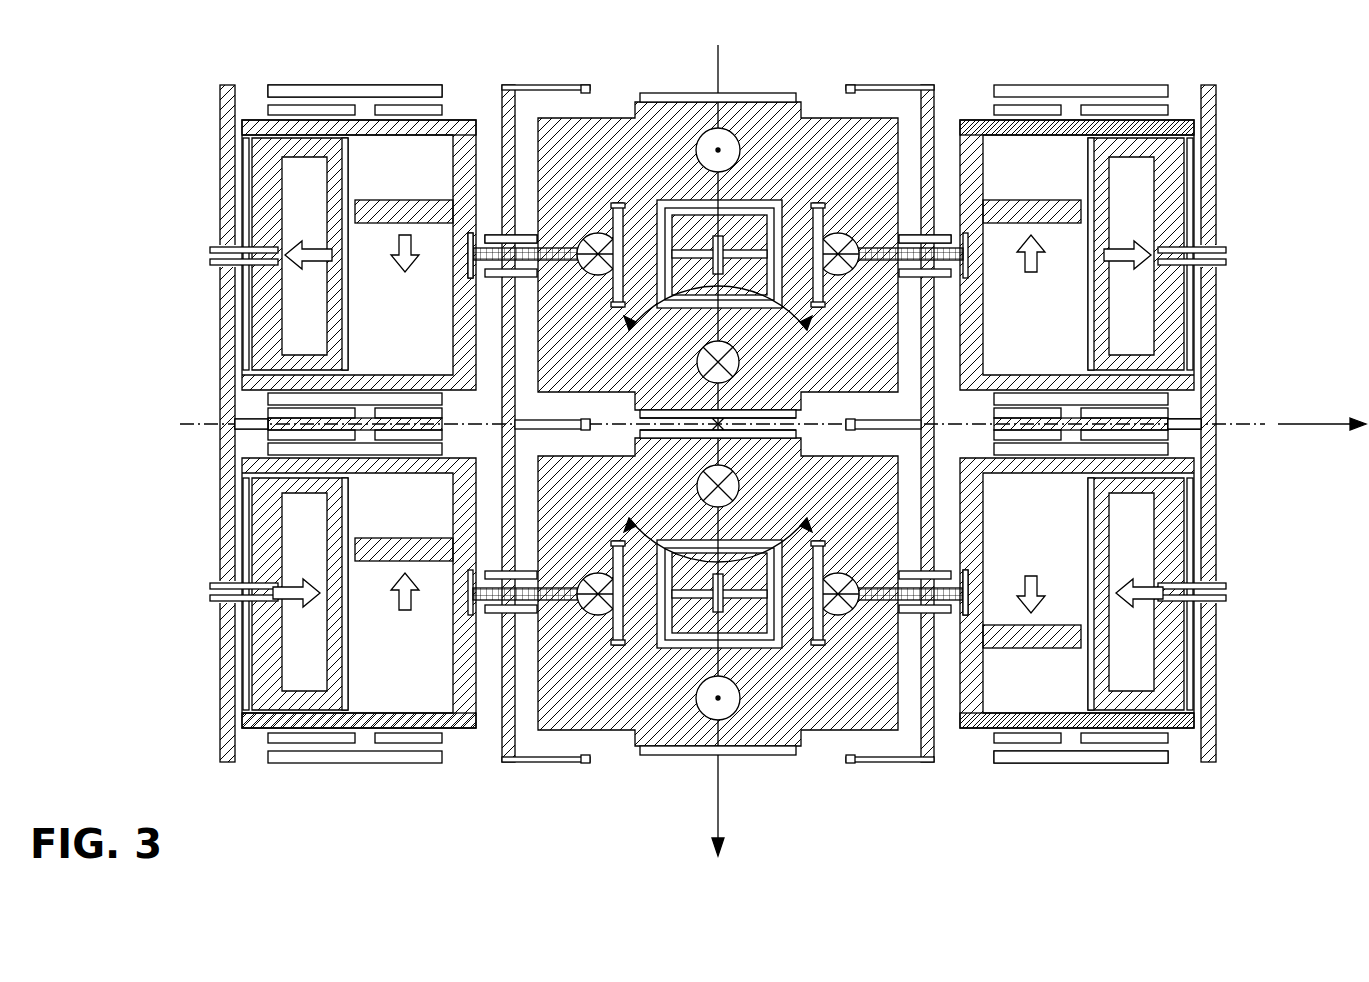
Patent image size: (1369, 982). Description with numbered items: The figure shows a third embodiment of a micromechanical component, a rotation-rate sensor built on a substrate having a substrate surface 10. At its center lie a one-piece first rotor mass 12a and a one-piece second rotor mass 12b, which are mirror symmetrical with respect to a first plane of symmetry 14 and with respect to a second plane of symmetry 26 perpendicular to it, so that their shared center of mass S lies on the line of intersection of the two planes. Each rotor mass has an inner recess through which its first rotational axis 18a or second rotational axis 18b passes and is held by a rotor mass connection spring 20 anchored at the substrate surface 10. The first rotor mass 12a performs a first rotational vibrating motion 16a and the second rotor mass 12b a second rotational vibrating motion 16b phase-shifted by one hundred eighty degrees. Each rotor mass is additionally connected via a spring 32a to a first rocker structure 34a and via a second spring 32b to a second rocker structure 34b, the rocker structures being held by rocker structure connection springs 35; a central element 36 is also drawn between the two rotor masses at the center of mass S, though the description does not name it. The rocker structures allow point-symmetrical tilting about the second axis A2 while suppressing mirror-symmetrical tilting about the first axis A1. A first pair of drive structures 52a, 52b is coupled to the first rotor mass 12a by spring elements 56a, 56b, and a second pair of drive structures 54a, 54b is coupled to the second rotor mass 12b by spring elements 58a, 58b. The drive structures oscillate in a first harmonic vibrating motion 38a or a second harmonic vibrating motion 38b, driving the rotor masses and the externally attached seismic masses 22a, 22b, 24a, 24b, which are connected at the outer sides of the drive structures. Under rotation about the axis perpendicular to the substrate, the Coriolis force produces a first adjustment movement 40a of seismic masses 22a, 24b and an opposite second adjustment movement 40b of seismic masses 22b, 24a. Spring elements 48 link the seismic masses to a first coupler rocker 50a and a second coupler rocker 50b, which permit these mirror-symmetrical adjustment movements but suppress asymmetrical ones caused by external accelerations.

The substrate surface 10 is at (1349, 271).
The first rotor mass 12a is at (790, 116).
The second rotor mass 12b is at (786, 755).
The first plane of symmetry 14 is at (705, 760).
The first rotational vibrating motion 16a is at (702, 140).
The second rotational vibrating motion 16b is at (742, 704).
The first rotational axis 18a is at (714, 262).
The second rotational axis 18b is at (714, 624).
The rotor mass connection spring 20 is at (720, 424).
The first seismic mass of the first pair 22a is at (250, 178).
The second seismic mass of the first pair 22b is at (1186, 178).
The first seismic mass of the second pair 24a is at (250, 512).
The second seismic mass of the second pair 24b is at (1186, 512).
The second plane of symmetry 26 is at (1246, 430).
The spring 32a is at (490, 262).
The second spring 32b is at (945, 616).
The first rocker structure 34a is at (515, 352).
The second rocker structure 34b is at (920, 364).
The rocker structure connection spring 35 is at (541, 85).
The coupling element 36 is at (780, 432).
The first harmonic vibrating motion 38a is at (405, 232).
The second harmonic vibrating motion 38b is at (1031, 232).
The first adjustment movement 40a is at (252, 253).
The second adjustment movement 40b is at (252, 591).
The spring element 48 is at (305, 92).
The first coupler rocker 50a is at (225, 95).
The second coupler rocker 50b is at (1216, 730).
The first drive structure of the first pair 52a is at (400, 120).
The second drive structure of the first pair 52b is at (1036, 120).
The first drive structure of the second pair 54a is at (405, 728).
The second drive structure of the second pair 54b is at (1032, 728).
The first spring element 56a is at (530, 240).
The second spring element 56b is at (906, 240).
The first spring element 58a is at (520, 612).
The second spring element 58b is at (912, 612).
The shared center of mass S is at (650, 424).
The first axis A1 is at (712, 842).
The second axis A2 is at (1337, 418).